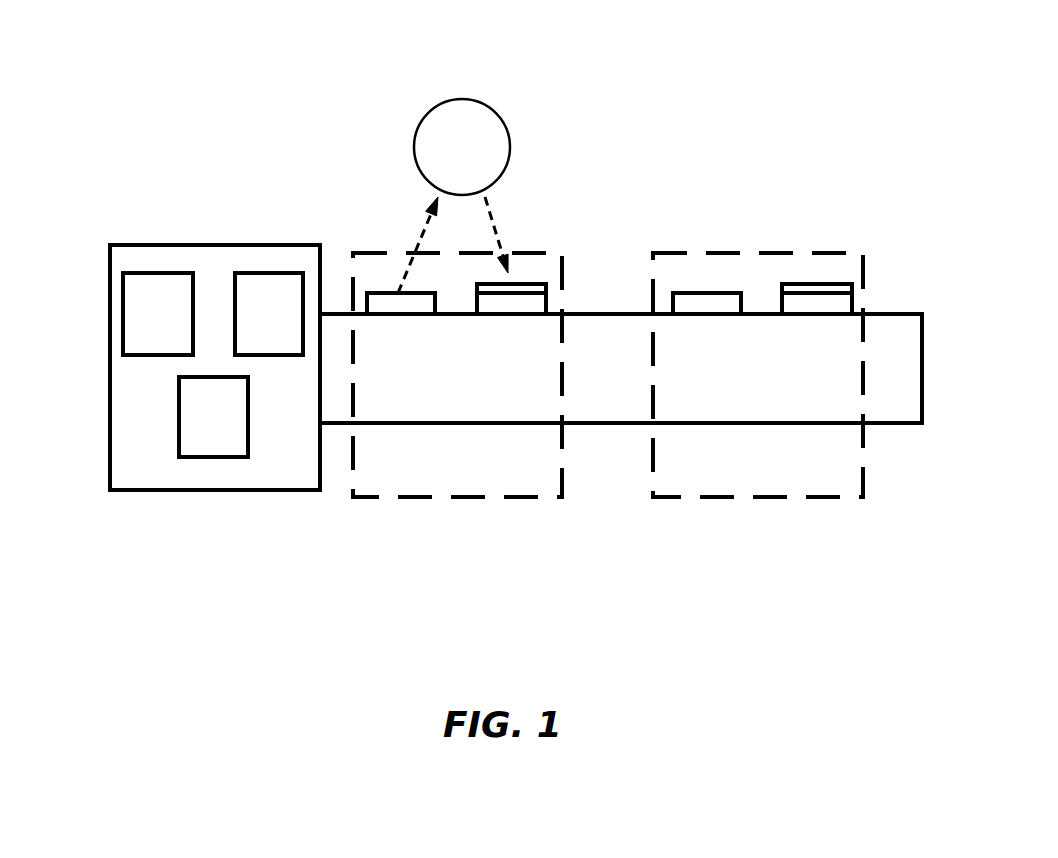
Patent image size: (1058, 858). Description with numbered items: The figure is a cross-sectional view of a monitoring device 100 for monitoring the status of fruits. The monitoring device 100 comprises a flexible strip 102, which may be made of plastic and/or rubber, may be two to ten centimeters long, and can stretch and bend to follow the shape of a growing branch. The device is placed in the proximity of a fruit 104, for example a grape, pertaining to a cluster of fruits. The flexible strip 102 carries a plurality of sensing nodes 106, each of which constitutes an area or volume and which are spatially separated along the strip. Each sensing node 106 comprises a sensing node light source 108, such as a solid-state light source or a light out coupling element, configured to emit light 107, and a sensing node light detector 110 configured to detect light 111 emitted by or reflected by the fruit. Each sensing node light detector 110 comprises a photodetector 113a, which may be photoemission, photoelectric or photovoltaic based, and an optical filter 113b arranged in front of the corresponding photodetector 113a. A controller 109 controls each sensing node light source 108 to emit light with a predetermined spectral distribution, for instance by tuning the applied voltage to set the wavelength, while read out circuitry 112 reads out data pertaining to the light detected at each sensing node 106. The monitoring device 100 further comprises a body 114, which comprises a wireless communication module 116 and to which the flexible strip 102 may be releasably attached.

The monitoring device 100 is at (132, 197).
The flexible strip 102 is at (611, 390).
The fruit 104 is at (482, 152).
The sensing node 106 is at (505, 468).
The light 107 is at (415, 222).
The sensing node light source 108 is at (398, 305).
The controller 109 is at (272, 312).
The sensing node light detector 110 is at (547, 297).
The light 111 is at (511, 290).
The read out circuitry 112 is at (232, 412).
The photodetector 113a is at (533, 303).
The optical filter 113b is at (513, 290).
The body 114 is at (282, 462).
The wireless communication module 116 is at (167, 312).